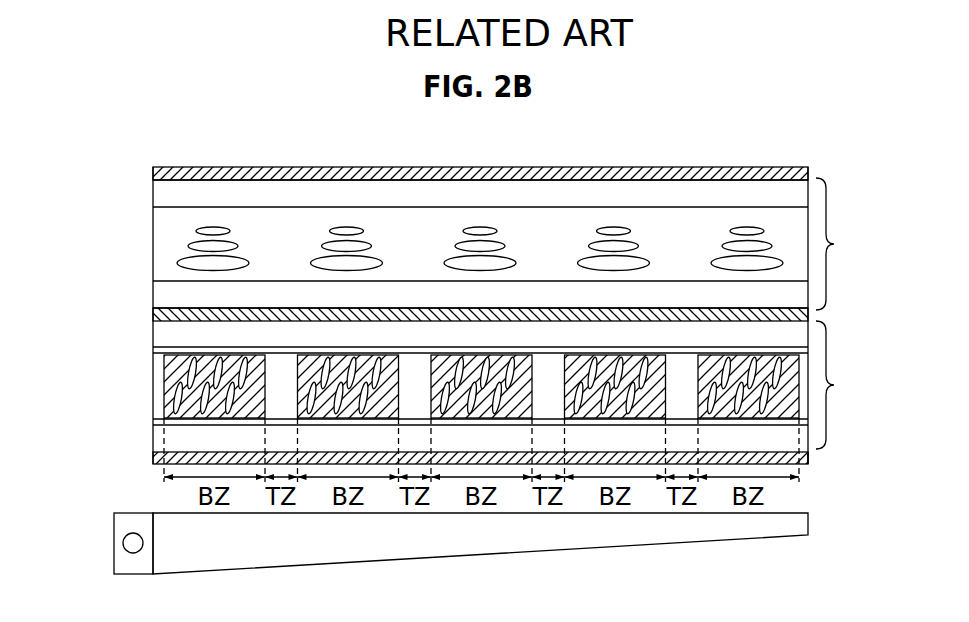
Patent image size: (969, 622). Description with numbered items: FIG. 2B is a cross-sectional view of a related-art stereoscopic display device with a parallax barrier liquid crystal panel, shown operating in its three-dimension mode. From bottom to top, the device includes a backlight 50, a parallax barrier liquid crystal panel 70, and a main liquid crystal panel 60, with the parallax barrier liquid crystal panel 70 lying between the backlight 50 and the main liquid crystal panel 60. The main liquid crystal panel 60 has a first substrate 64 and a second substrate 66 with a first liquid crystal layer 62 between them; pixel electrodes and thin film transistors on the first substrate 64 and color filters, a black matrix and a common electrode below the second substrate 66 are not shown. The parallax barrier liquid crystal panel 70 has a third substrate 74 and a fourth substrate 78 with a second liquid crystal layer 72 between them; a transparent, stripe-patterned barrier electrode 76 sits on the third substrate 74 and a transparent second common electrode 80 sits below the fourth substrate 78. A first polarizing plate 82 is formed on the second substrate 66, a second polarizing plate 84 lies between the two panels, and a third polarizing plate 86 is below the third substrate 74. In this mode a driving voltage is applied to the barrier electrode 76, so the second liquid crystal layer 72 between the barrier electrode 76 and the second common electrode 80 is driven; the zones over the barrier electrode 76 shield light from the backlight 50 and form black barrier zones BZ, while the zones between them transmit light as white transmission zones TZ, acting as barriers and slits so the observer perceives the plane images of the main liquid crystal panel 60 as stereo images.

The backlight 50 is at (790, 523).
The main liquid crystal panel 60 is at (842, 244).
The first liquid crystal layer 62 is at (160, 233).
The first substrate 64 is at (160, 292).
The second substrate 66 is at (160, 182).
The parallax barrier liquid crystal panel 70 is at (843, 385).
The second liquid crystal layer 72 is at (158, 386).
The third substrate 74 is at (160, 444).
The barrier electrode 76 is at (165, 420).
The fourth substrate 78 is at (160, 333).
The second common electrode 80 is at (158, 350).
The first polarizing plate 82 is at (808, 167).
The second polarizing plate 84 is at (812, 308).
The third polarizing plate 86 is at (808, 462).